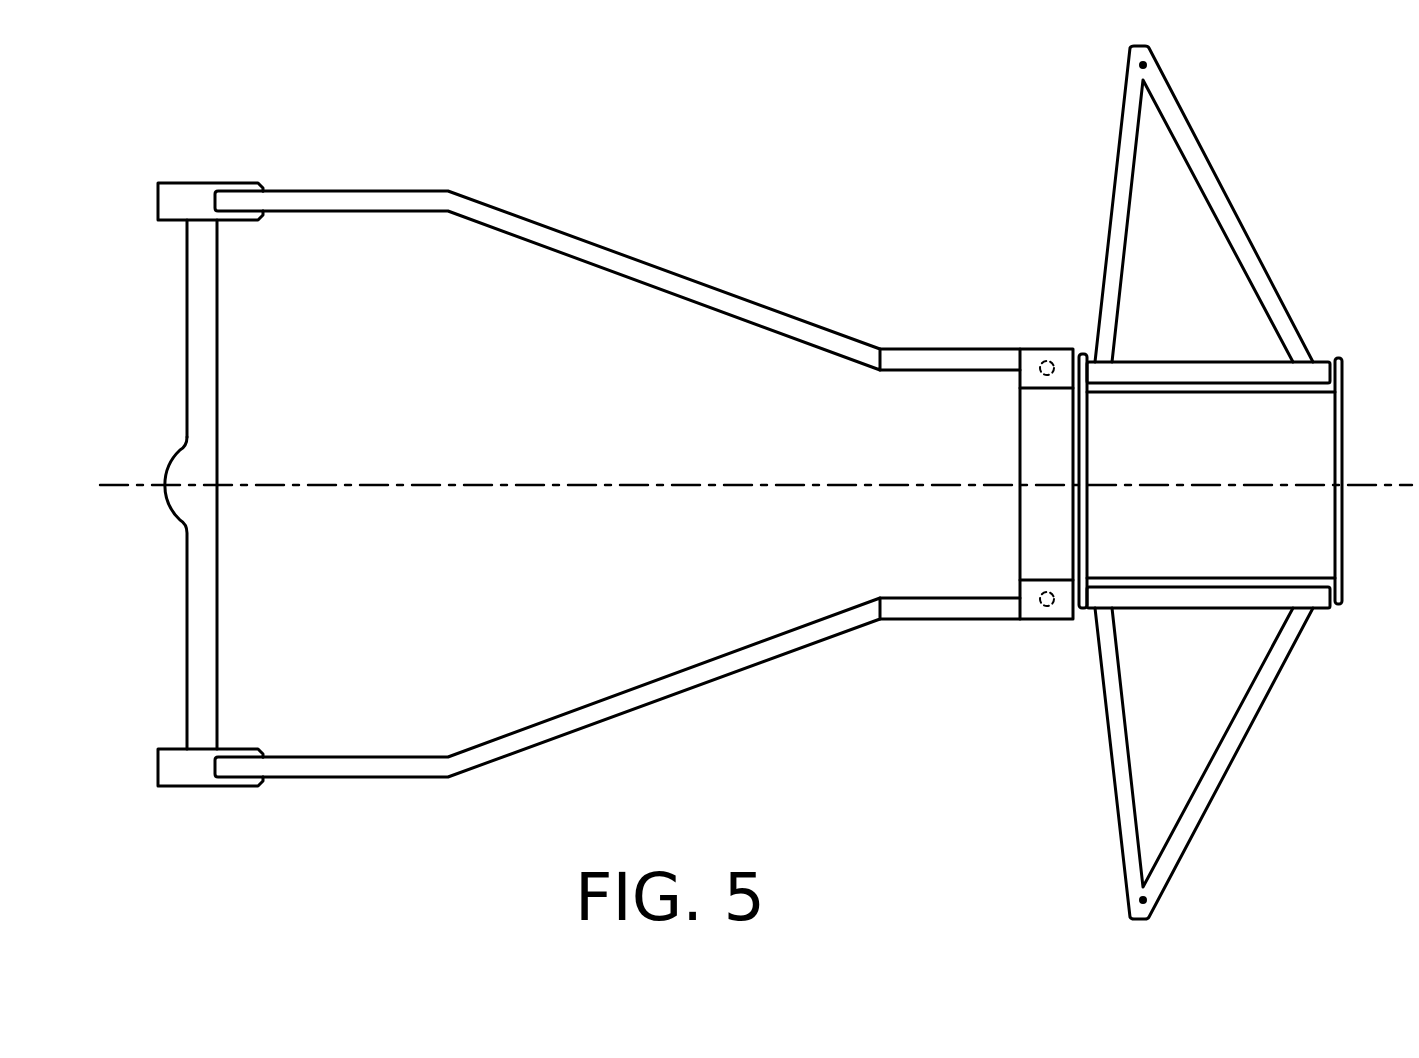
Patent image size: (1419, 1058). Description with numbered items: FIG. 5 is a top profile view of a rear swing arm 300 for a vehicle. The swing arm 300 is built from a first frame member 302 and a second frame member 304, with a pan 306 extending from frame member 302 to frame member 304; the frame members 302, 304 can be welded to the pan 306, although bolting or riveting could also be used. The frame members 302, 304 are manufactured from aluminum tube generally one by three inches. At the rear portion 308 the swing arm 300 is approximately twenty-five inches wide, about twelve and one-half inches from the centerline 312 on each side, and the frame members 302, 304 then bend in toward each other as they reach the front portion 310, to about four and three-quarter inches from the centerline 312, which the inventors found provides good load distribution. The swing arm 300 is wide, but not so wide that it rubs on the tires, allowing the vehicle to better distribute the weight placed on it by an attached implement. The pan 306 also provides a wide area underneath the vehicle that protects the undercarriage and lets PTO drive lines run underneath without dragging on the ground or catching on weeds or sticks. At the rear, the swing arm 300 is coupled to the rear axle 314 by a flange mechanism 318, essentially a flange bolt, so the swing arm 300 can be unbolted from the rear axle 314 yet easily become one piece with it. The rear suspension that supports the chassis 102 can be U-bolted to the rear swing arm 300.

The rear swing arm 300 is at (553, 129).
The chassis 102 is at (1060, 446).
The first frame member 302 is at (637, 268).
The second frame member 304 is at (758, 653).
The pan 306 is at (637, 401).
The rear portion 308 is at (228, 282).
The front portion 310 is at (1063, 356).
The centerline 312 is at (499, 488).
The rear axle 314 is at (197, 611).
The flange mechanism 318 is at (178, 195).